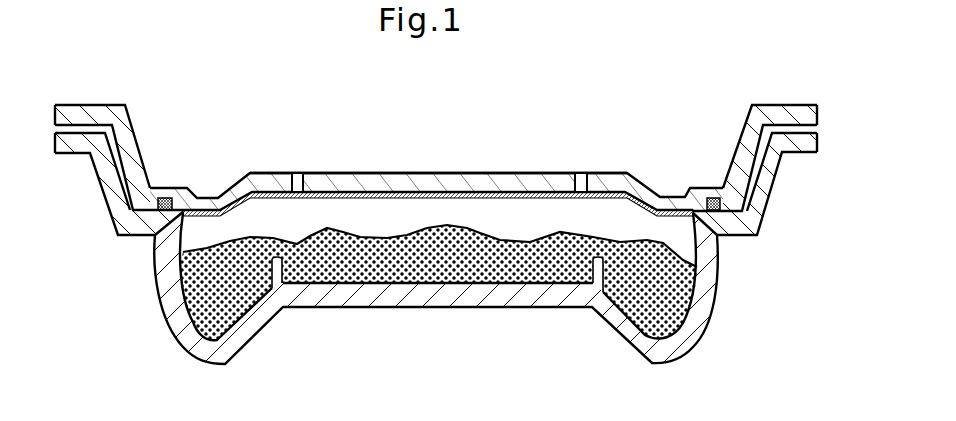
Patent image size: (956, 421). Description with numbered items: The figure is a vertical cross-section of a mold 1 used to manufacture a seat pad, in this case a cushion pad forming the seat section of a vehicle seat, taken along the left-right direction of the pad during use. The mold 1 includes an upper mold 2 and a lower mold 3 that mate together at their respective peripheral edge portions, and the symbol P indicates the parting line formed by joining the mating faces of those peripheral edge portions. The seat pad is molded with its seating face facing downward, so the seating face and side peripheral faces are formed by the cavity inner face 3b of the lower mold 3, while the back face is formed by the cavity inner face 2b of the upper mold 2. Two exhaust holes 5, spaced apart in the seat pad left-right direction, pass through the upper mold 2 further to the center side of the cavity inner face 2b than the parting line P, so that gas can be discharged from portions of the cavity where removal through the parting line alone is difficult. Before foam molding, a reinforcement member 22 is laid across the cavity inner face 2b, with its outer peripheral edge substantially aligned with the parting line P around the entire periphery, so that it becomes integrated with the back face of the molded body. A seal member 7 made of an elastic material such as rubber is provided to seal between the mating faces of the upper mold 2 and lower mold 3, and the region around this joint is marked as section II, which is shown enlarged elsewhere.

The mold 1 is at (634, 89).
The upper mold 2 is at (436, 152).
The cavity inner face of the upper mold 2b is at (512, 171).
The exhaust holes 5 is at (298, 171).
The seal member 7 is at (165, 198).
The reinforcement member 22 is at (423, 198).
The lower mold 3 is at (391, 308).
The cavity inner face of the lower mold 3b is at (437, 275).
The parting line P is at (142, 218).
The section II is at (105, 331).